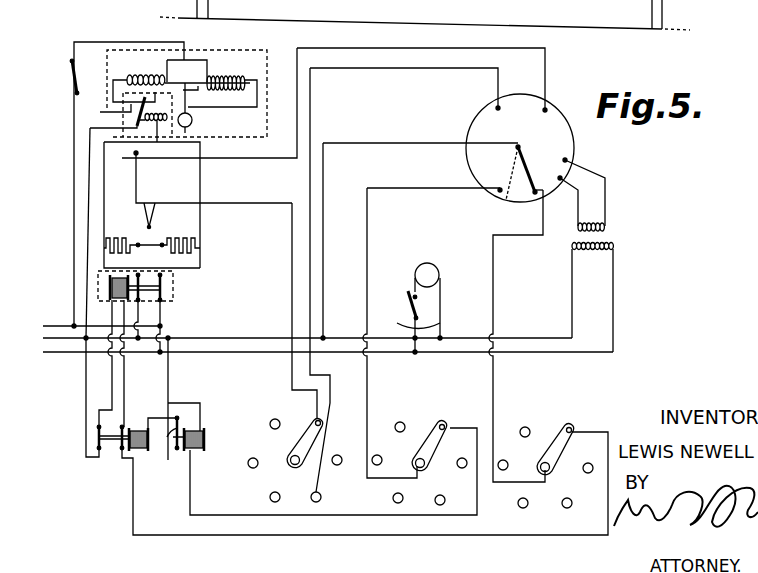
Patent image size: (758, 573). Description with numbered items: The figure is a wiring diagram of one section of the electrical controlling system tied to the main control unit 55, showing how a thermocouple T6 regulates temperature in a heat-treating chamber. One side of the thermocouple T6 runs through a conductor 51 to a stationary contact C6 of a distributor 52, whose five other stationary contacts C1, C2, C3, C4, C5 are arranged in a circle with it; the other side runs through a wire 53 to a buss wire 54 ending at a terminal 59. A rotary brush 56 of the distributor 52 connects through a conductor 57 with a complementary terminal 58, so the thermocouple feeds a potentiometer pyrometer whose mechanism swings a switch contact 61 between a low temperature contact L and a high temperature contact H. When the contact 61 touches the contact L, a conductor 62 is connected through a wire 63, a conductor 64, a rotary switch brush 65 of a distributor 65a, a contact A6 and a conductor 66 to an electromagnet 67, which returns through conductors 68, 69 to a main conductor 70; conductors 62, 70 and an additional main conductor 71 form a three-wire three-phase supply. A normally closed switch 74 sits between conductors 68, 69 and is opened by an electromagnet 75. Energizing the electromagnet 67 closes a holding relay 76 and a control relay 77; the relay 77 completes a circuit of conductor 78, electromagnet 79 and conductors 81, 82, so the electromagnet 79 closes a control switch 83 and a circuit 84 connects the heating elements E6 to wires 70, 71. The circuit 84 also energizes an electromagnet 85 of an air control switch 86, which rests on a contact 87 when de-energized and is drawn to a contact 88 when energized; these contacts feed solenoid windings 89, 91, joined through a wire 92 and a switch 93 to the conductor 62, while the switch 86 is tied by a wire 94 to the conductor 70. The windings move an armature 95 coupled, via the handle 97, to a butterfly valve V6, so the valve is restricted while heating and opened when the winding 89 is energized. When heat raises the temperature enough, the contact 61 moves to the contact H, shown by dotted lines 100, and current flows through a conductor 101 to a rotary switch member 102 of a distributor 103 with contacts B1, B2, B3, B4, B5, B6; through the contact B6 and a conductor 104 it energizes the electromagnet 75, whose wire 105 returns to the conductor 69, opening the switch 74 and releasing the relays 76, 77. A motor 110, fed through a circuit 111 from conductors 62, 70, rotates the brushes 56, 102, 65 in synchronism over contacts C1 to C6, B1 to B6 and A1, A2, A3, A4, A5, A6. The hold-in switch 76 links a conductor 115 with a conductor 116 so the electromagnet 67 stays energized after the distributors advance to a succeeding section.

The conductor 51 is at (274, 203).
The distributor 52 is at (279, 476).
The wire 53 is at (138, 190).
The buss wire 54 is at (265, 158).
The main control unit 55 is at (568, 138).
The rotary brush 56 is at (294, 442).
The conductor 57 is at (312, 94).
The terminal 58 is at (497, 107).
The terminal 59 is at (548, 108).
The switch contact 61 is at (527, 166).
The conductor 62 is at (254, 336).
The wire 63 is at (404, 143).
The conductor 64 is at (494, 282).
The rotary switch brush 65 is at (552, 450).
The distributor 65a is at (579, 444).
The conductor 66 is at (312, 536).
The electromagnet 67 is at (140, 452).
The conductor 68 is at (151, 428).
The conductor 69 is at (170, 372).
The main conductor 70 is at (256, 353).
The main conductor 71 is at (64, 352).
The switch 74 is at (321, 466).
The electromagnet 75 is at (207, 437).
The holding relay 76 is at (117, 432).
The control relay 77 is at (97, 428).
The conductor 78 is at (124, 312).
The electromagnet 79 is at (110, 288).
The conductor 81 is at (110, 378).
The conductor 82 is at (86, 401).
The control switch 83 is at (164, 292).
The circuit 84 is at (201, 268).
The electromagnet 85 is at (158, 126).
The air control switch 86 is at (137, 120).
The contact 87 is at (130, 104).
The contact 88 is at (146, 78).
The solenoid winding 89 is at (128, 78).
The solenoid winding 91 is at (226, 77).
The wire 92 is at (73, 166).
The switch 93 is at (73, 80).
The wire 94 is at (86, 212).
The armature 95 is at (200, 90).
The handle 97 is at (197, 88).
The dotted lines 100 is at (514, 189).
The conductor 101 is at (368, 228).
The rotary switch member 102 is at (432, 440).
The distributor 103 is at (426, 510).
The conductor 104 is at (350, 515).
The wire 105 is at (193, 403).
The motor 110 is at (446, 258).
The circuit 111 is at (414, 318).
The conductor 115 is at (126, 368).
The conductor 116 is at (133, 520).
The butterfly valve V6 is at (192, 120).
The thermocouple T6 is at (152, 222).
The heating elements E6 is at (119, 240).
The high temperature contact H is at (494, 178).
The low temperature contact L is at (540, 178).
The stationary contact C1 is at (274, 418).
The stationary contact C2 is at (247, 465).
The stationary contact C3 is at (274, 503).
The stationary contact C4 is at (320, 494).
The stationary contact C5 is at (338, 454).
The stationary contact C6 is at (324, 421).
The contact B1 is at (398, 421).
The contact B2 is at (378, 455).
The contact B3 is at (397, 504).
The contact B4 is at (446, 500).
The contact B5 is at (460, 458).
The stationary contact B6 is at (447, 423).
The contact A1 is at (524, 426).
The contact A2 is at (504, 459).
The contact A3 is at (522, 509).
The contact A4 is at (568, 509).
The contact A5 is at (588, 474).
The contact A6 is at (572, 427).